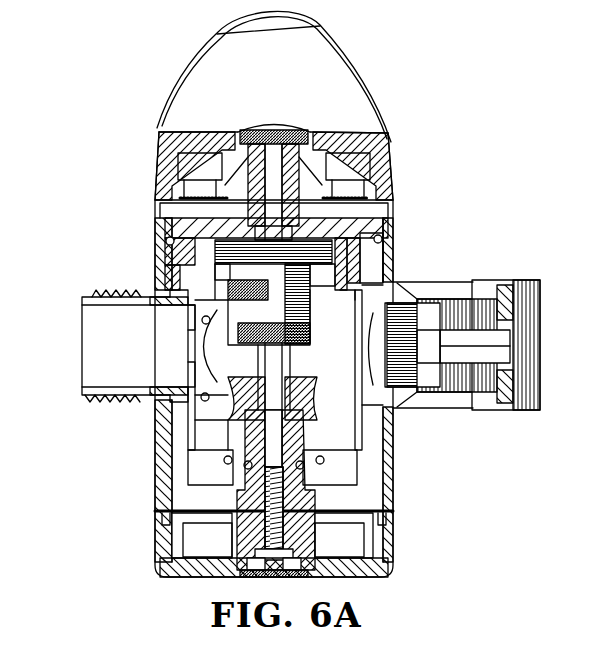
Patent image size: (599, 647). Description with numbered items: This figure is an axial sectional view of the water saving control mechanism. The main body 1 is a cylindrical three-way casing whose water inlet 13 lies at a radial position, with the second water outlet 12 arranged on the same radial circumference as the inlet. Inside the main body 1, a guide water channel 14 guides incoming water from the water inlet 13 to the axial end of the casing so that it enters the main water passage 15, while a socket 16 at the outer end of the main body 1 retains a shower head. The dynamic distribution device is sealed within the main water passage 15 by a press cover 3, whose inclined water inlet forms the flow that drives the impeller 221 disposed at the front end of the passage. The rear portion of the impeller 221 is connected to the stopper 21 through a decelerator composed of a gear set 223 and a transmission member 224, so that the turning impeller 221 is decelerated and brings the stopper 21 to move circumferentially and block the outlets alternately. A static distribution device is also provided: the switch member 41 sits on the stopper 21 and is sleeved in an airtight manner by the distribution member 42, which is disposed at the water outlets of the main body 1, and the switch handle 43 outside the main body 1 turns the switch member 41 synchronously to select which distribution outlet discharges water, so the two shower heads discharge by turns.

The main body 1 is at (345, 222).
The press cover 3 is at (182, 226).
The second water outlet 12 is at (95, 337).
The water inlet 13 is at (458, 285).
The guide water channel 14 is at (368, 262).
The main water passage 15 is at (213, 255).
The socket 16 is at (357, 97).
The stopper 21 is at (290, 425).
The switch member 41 is at (205, 405).
The distribution member 42 is at (230, 412).
The switch handle 43 is at (385, 545).
The impeller 221 is at (383, 232).
The gear set 223 is at (235, 277).
The transmission member 224 is at (340, 286).